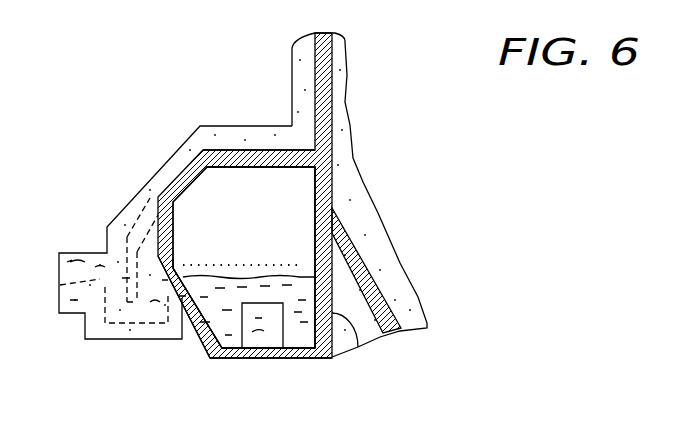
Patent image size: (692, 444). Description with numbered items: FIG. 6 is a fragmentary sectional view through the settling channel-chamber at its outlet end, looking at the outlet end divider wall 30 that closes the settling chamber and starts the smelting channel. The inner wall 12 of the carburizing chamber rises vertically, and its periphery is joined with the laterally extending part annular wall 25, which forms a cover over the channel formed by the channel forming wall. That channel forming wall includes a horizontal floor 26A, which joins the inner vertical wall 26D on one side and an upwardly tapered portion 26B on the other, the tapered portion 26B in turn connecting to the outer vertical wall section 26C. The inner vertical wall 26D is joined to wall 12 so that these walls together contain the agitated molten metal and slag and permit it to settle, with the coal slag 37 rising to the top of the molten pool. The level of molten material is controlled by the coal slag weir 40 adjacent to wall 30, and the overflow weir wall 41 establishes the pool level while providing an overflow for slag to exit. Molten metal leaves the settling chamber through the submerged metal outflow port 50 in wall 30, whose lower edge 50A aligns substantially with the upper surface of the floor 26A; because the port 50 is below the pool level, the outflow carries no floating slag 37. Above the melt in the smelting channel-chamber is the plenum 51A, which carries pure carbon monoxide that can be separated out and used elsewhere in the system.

The wall 12 is at (332, 108).
The part annular wall 25 is at (248, 152).
The outlet end divider wall 30 is at (213, 190).
The plenum 51A is at (293, 188).
The outer vertical wall section 26C is at (113, 210).
The overflow weir wall 41 is at (183, 260).
The coal slag 37 is at (287, 260).
The upwardly tapered portion 26B is at (199, 342).
The floor 26A is at (230, 360).
The submerged metal outflow port 50 is at (272, 320).
The lower edge of port 50A is at (252, 348).
The inner vertical wall 26D is at (355, 343).
The coal slag weir 40 is at (66, 325).